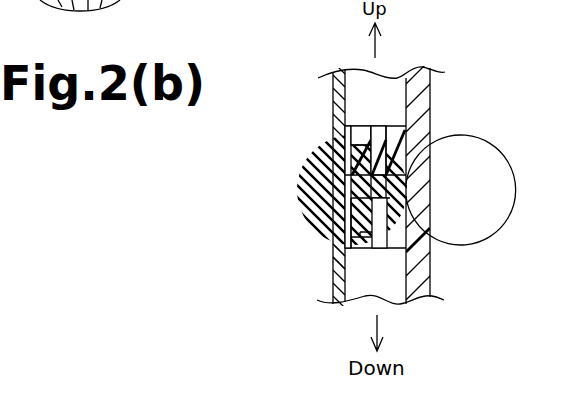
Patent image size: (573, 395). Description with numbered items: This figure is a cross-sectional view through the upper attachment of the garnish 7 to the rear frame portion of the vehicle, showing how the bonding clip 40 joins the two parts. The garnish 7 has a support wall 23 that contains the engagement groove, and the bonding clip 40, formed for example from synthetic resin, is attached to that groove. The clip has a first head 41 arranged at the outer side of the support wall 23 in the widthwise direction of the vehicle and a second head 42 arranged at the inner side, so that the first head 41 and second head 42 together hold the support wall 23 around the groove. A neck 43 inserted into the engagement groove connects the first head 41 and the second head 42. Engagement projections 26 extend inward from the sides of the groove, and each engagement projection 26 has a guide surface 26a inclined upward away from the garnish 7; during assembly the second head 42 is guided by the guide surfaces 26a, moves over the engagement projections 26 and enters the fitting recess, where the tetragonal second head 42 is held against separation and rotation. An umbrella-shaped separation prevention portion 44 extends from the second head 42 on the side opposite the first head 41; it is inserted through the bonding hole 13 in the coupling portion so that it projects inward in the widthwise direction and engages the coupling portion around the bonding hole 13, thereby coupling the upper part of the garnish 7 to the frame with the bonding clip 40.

The garnish 7 is at (424, 213).
The bonding hole 13 is at (338, 160).
The support wall 23 is at (381, 140).
The engagement projection 26 is at (333, 249).
The guide surface 26a is at (334, 262).
The bonding clip 40 is at (406, 185).
The first head 41 is at (392, 162).
The second head 42 is at (346, 128).
The neck 43 is at (393, 237).
The separation prevention portion 44 is at (299, 190).